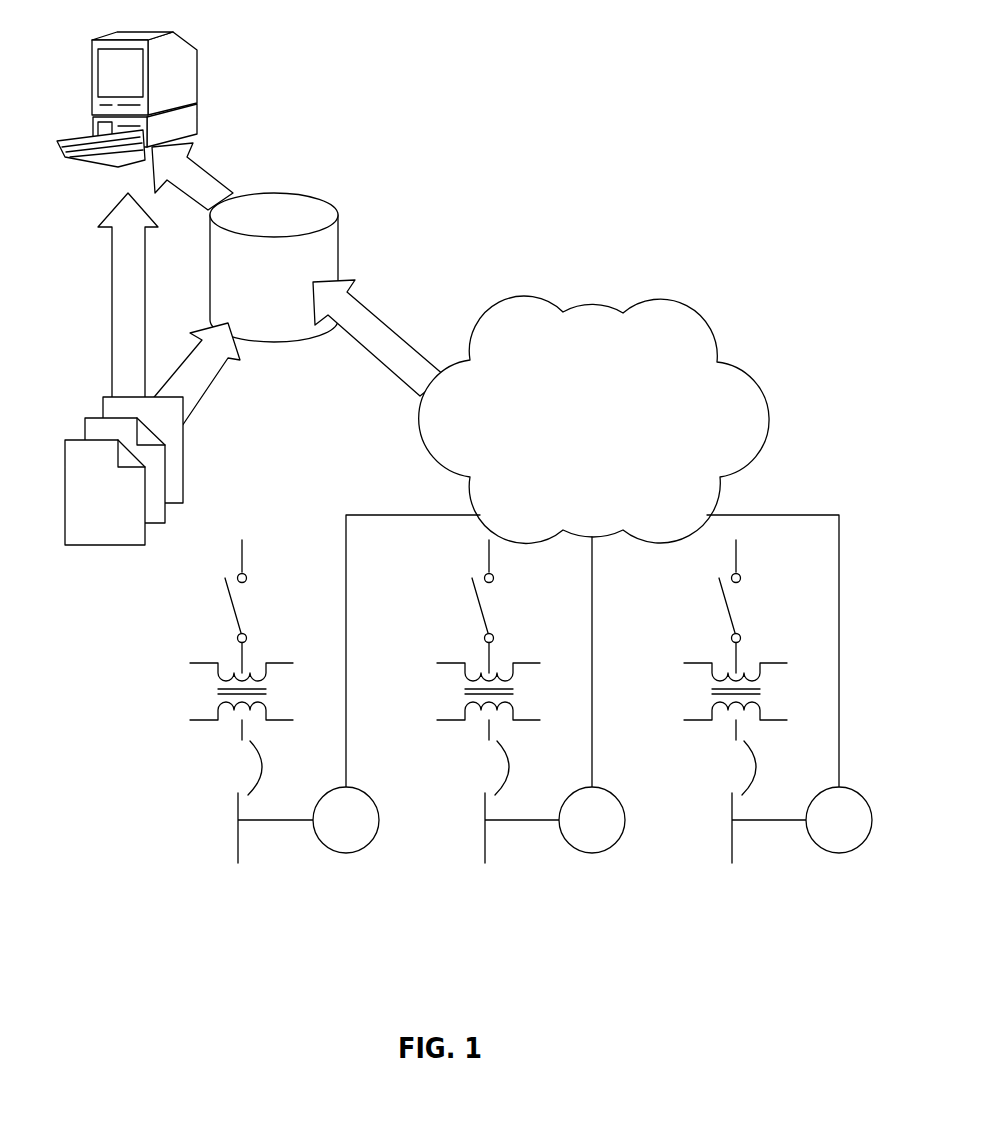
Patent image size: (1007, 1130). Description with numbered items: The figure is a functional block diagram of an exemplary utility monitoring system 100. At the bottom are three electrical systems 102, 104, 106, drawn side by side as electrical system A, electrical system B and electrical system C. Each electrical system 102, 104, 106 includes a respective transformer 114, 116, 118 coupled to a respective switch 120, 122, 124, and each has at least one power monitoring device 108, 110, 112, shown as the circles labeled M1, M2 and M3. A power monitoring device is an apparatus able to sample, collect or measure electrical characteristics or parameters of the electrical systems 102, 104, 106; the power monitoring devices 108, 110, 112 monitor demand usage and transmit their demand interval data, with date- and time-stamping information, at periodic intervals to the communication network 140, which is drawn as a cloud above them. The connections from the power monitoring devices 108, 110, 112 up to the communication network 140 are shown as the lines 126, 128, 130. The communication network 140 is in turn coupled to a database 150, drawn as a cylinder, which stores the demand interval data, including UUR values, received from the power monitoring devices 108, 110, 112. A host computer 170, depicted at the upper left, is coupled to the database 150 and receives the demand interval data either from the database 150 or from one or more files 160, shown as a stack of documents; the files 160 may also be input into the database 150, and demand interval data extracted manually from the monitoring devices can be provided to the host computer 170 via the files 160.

The utility monitoring system 100 is at (630, 114).
The electrical system 102 is at (303, 950).
The electrical system 104 is at (593, 950).
The electrical system 106 is at (815, 950).
The power monitoring device 108 is at (352, 788).
The power monitoring device 110 is at (599, 788).
The power monitoring device 112 is at (846, 788).
The transformer 114 is at (205, 722).
The transformer 116 is at (452, 722).
The transformer 118 is at (699, 722).
The switch 120 is at (232, 603).
The switch 122 is at (481, 608).
The switch 124 is at (728, 608).
The communication link 126 is at (347, 632).
The communication link 128 is at (593, 632).
The communication link 130 is at (840, 632).
The communication network 140 is at (595, 304).
The database 150 is at (275, 200).
The files 160 is at (100, 548).
The host computer 170 is at (143, 36).